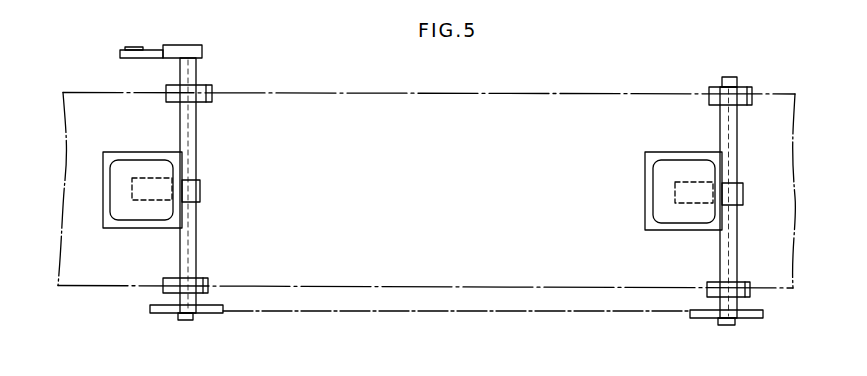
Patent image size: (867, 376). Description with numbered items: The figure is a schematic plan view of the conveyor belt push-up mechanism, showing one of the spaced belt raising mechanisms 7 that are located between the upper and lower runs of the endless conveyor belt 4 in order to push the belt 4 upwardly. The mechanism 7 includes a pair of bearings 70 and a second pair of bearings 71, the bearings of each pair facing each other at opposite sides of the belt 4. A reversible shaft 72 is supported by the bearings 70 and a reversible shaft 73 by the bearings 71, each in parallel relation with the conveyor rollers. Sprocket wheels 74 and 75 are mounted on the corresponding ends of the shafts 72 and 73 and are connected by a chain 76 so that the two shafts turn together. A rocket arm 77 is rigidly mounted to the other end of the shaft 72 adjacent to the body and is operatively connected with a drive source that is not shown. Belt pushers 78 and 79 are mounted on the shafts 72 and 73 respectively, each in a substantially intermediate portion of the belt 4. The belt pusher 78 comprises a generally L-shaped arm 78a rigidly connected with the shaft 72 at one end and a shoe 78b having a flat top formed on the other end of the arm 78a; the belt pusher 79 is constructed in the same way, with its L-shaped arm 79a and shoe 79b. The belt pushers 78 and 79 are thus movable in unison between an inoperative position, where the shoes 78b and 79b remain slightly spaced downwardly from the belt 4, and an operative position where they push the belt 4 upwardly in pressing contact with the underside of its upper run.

The endless conveyor belt 4 is at (372, 97).
The belt raising mechanism 7 is at (123, 133).
The bearings 70 is at (208, 82).
The bearings 71 is at (747, 85).
The reversible shaft 72 is at (196, 255).
The reversible shaft 73 is at (737, 230).
The sprocket wheel 74 is at (207, 315).
The sprocket wheel 75 is at (747, 320).
The chain 76 is at (425, 312).
The rocket arm 77 is at (170, 45).
The belt pusher 78 is at (113, 190).
The L-shaped arm 78a is at (200, 190).
The shoe 78b is at (127, 228).
The belt pusher 79 is at (657, 192).
The L-shaped arm 79a is at (743, 193).
The shoe 79b is at (653, 230).